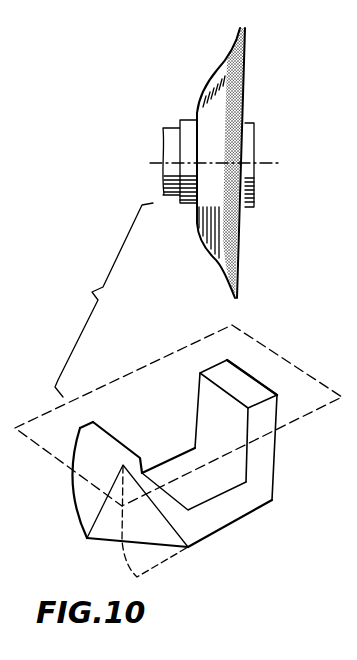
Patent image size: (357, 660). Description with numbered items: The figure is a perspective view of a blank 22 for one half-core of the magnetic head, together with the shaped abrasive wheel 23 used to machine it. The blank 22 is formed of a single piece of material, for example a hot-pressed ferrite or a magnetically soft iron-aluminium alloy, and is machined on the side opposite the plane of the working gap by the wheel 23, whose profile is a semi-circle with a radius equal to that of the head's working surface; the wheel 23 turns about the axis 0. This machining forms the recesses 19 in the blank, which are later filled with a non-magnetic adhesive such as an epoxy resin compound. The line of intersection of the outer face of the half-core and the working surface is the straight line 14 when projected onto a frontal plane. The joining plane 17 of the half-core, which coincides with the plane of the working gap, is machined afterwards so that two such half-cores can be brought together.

The axis of rotation 0 is at (261, 163).
The shaped abrasive wheel 23 is at (205, 220).
The joining plane 17 is at (278, 368).
The straight line 14 is at (100, 512).
The blank 22 is at (236, 518).
The recesses 19 is at (158, 560).